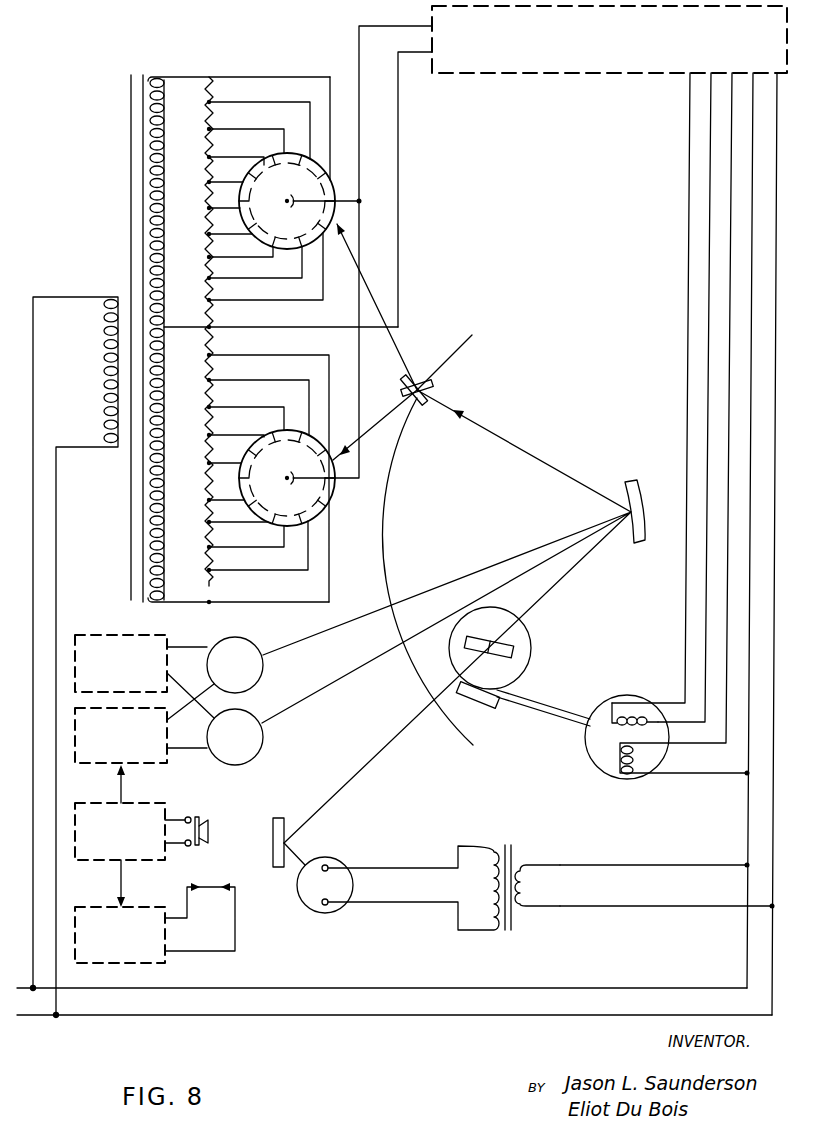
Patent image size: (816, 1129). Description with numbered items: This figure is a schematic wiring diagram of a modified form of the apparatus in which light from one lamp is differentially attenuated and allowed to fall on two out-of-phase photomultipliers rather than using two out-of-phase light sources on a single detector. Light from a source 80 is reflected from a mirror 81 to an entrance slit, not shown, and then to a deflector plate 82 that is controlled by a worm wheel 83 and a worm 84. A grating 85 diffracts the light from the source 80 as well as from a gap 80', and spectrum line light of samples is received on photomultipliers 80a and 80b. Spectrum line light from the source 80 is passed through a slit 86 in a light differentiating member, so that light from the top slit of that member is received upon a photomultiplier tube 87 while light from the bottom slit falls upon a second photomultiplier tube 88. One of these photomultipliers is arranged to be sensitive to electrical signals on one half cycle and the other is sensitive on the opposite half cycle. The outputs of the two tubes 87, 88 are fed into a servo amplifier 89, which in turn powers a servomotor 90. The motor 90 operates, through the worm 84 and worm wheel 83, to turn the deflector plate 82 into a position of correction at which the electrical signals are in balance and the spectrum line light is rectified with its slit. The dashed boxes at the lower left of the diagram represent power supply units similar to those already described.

The light source 80 is at (337, 875).
The photomultiplier 80a is at (243, 645).
The photomultiplier 80b is at (240, 720).
The gap 80' is at (209, 905).
The mirror 81 is at (275, 804).
The deflector plate 82 is at (532, 647).
The worm wheel 83 is at (528, 673).
The worm 84 is at (513, 705).
The grating 85 is at (644, 500).
The slit 86 is at (429, 384).
The photomultiplier tube 87 is at (336, 191).
The second photomultiplier tube 88 is at (338, 422).
The servo amplifier 89 is at (555, 75).
The servomotor 90 is at (628, 694).